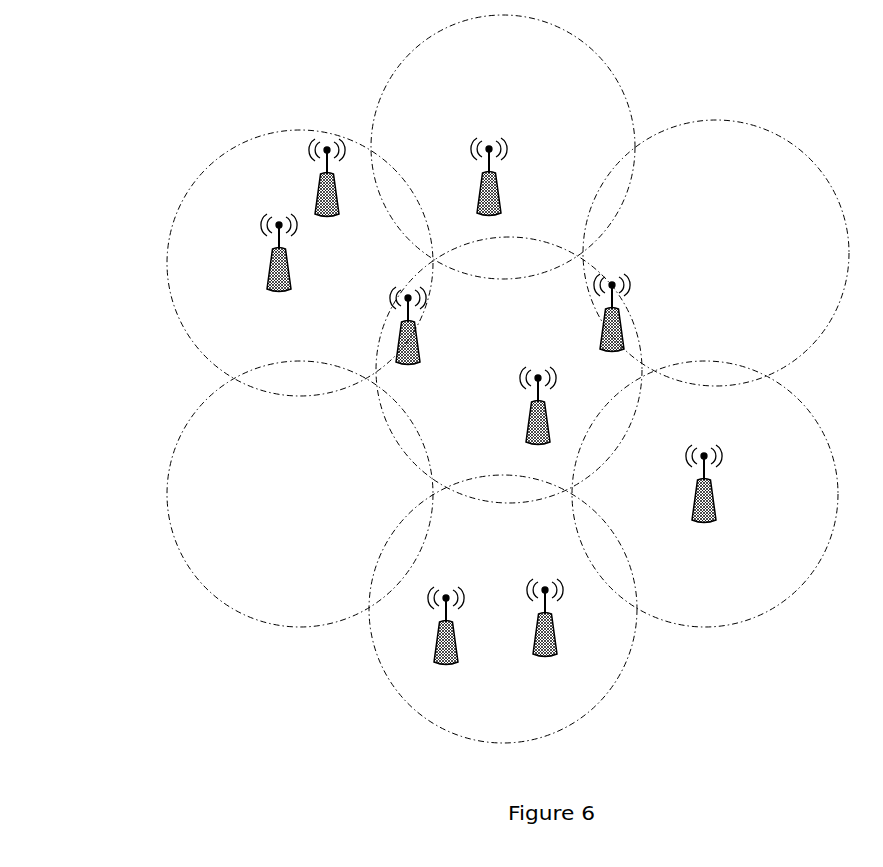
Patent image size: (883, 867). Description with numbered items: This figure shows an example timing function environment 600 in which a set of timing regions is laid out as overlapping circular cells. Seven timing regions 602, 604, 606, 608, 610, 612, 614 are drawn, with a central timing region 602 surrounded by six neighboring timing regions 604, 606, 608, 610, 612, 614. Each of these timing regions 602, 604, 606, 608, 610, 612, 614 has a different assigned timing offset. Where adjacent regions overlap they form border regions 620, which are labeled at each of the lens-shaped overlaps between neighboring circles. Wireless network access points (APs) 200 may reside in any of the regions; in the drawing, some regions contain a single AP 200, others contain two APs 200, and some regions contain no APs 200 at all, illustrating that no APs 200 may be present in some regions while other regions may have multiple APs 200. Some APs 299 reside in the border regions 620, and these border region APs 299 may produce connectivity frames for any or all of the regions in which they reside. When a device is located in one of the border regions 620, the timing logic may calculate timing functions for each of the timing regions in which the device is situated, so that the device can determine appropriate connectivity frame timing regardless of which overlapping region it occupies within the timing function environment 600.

The timing function environment 600 is at (117, 67).
The timing region 602 is at (533, 342).
The timing region 604 is at (515, 83).
The timing region 606 is at (737, 246).
The timing region 608 is at (783, 496).
The timing region 610 is at (507, 572).
The timing region 612 is at (285, 486).
The timing region 614 is at (333, 275).
The border region 620 is at (415, 222).
The access point 200 is at (326, 171).
The border region access point 299 is at (407, 319).